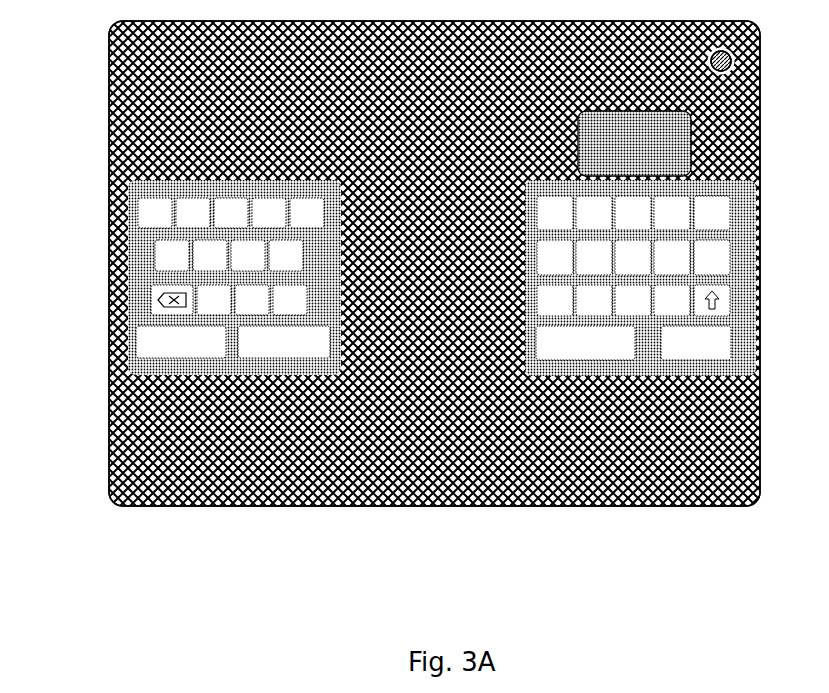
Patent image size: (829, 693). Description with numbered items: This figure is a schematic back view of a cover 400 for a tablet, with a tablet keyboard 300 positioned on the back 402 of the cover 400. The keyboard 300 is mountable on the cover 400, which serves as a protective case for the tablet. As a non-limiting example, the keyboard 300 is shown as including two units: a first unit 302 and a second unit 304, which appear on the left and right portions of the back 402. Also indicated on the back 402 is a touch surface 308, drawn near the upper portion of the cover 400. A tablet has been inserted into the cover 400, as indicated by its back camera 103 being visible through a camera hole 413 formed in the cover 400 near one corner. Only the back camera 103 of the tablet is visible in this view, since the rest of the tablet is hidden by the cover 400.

The cover 400 is at (203, 556).
The back 402 is at (138, 414).
The tablet keyboard 300 is at (442, 279).
The first unit 302 is at (249, 154).
The second unit 304 is at (652, 388).
The touch surface 308 is at (552, 126).
The camera hole 413 is at (688, 58).
The back camera 103 is at (715, 76).